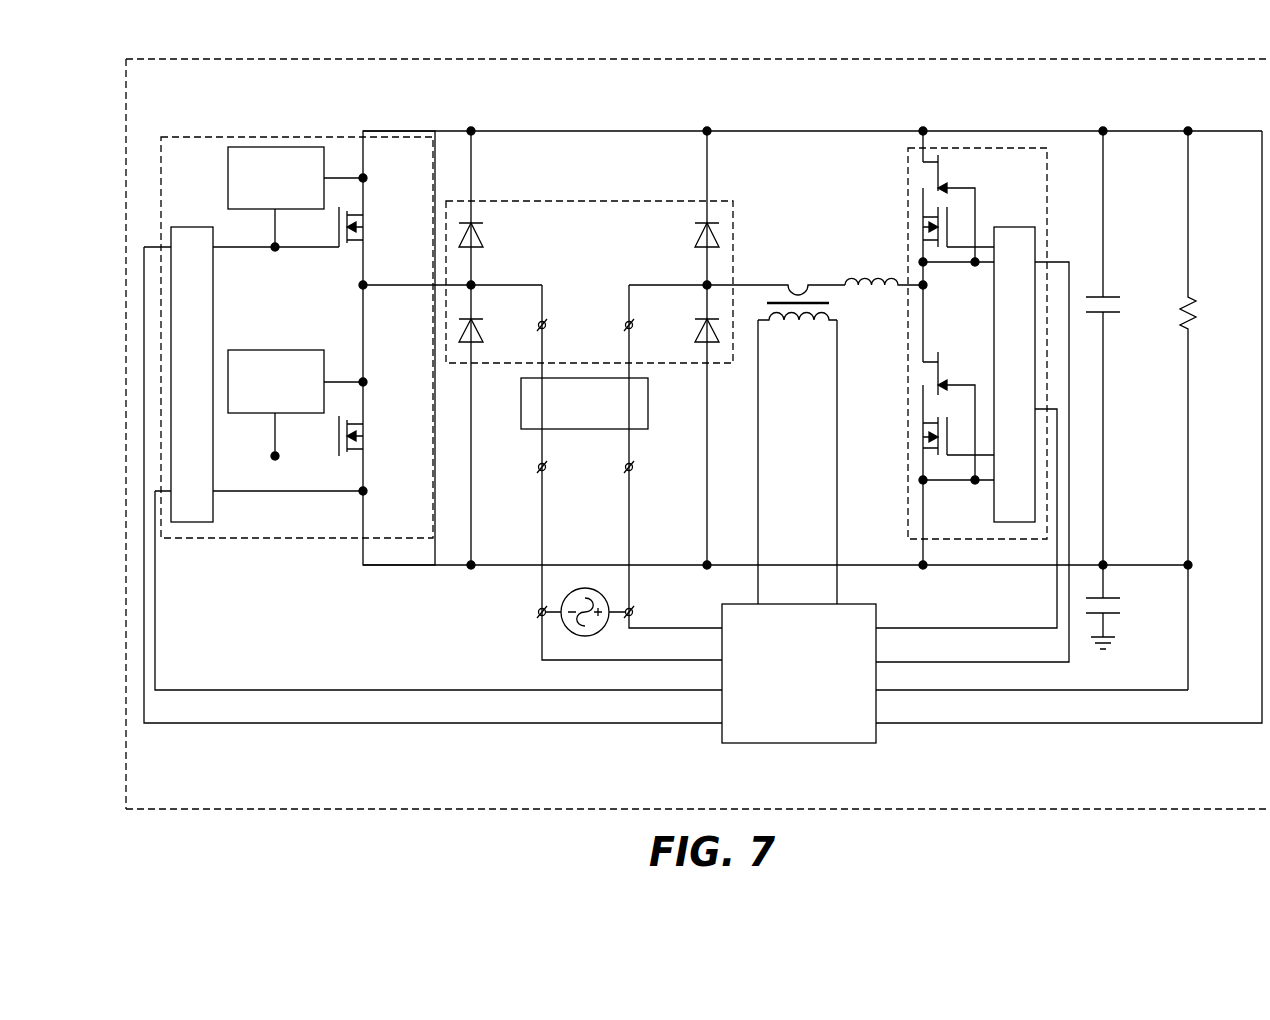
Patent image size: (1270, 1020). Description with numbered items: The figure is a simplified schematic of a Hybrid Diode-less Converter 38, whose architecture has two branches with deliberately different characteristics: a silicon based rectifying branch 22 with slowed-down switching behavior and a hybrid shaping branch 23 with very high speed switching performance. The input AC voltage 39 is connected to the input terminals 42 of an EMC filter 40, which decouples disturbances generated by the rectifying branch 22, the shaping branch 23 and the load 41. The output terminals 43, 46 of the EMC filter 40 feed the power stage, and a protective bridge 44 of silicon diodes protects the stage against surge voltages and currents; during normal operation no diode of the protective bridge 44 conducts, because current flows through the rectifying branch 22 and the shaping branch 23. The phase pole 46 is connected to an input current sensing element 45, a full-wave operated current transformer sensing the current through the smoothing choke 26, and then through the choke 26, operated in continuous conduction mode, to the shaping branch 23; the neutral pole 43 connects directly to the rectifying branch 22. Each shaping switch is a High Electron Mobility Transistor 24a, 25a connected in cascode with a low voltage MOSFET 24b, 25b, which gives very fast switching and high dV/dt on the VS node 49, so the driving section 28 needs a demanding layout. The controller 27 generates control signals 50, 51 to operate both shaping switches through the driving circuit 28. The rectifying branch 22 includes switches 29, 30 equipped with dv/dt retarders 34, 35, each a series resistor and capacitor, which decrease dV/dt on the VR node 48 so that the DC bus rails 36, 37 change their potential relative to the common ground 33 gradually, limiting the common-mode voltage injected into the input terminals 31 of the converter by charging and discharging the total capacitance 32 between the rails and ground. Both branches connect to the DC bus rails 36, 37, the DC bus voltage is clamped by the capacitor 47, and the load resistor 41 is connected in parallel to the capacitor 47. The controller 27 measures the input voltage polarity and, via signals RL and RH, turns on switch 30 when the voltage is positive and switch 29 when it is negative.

The rectifying branch 22 is at (222, 132).
The shaping branch 23 is at (1052, 197).
The High Electron Mobility Transistor 24a is at (919, 176).
The low voltage MOSFET 24b is at (919, 217).
The High Electron Mobility Transistor 25a is at (919, 380).
The low voltage MOSFET 25b is at (919, 434).
The smoothing choke 26 is at (870, 273).
The controller 27 is at (795, 747).
The driving section 28 is at (1015, 224).
The rectifying switch 29 is at (368, 227).
The rectifying switch 30 is at (368, 436).
The input terminals 31 is at (637, 603).
The total capacitance 32 is at (1123, 604).
The common ground 33 is at (1121, 645).
The dv/dt retarder 34 is at (224, 160).
The dv/dt retarder 35 is at (275, 346).
The DC bus rail 36 is at (790, 126).
The DC bus rail 37 is at (771, 562).
The Hybrid Diode-less Converter 38 is at (660, 54).
The input AC voltage 39 is at (559, 597).
The EMC filter 40 is at (653, 426).
The load 41 is at (1206, 308).
The input terminals of the EMC filter 42 is at (550, 472).
The neutral pole 43 is at (550, 319).
The protective bridge 44 is at (573, 196).
The input current sensing element 45 is at (798, 279).
The phase pole 46 is at (619, 319).
The capacitor 47 is at (1126, 308).
The VR node 48 is at (358, 292).
The VS node 49 is at (945, 299).
The control signal 50 is at (919, 607).
The control signal 51 is at (927, 651).